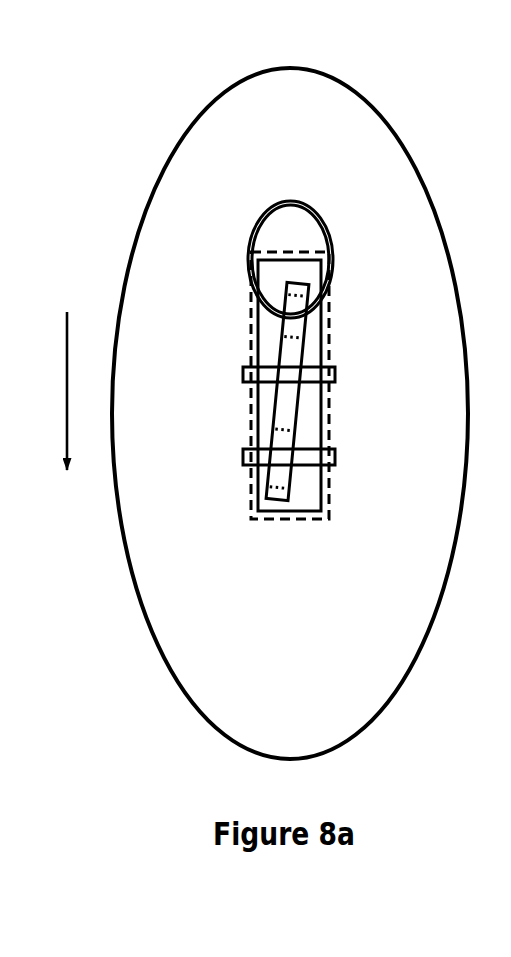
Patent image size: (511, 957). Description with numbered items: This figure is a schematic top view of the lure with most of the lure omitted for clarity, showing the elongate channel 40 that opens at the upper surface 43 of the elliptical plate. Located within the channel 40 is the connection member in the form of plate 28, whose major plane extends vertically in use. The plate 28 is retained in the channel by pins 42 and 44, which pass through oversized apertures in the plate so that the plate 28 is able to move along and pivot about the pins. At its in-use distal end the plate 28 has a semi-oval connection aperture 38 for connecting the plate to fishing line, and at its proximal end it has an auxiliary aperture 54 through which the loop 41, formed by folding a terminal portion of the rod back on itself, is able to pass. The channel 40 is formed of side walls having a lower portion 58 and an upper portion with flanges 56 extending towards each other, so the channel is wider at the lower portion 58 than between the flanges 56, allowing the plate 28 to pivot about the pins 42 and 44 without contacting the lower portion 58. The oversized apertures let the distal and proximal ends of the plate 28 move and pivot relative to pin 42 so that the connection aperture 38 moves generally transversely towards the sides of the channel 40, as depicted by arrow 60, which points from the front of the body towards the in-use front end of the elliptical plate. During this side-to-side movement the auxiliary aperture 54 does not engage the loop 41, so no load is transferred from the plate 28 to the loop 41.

The plate 28 is at (281, 489).
The connection aperture 38 is at (299, 478).
The elongate channel 40 is at (278, 287).
The loop 41 is at (255, 225).
The pin 42 is at (242, 375).
The upper surface 43 is at (298, 666).
The pin 44 is at (242, 457).
The auxiliary aperture 54 is at (297, 324).
The flanges 56 is at (258, 318).
The lower portion 58 is at (331, 398).
The arrow 60 is at (67, 377).